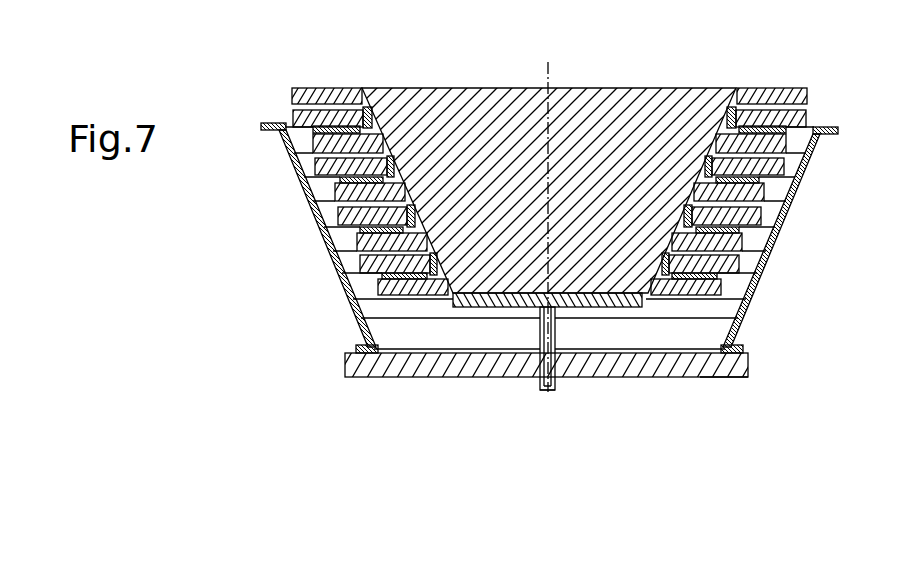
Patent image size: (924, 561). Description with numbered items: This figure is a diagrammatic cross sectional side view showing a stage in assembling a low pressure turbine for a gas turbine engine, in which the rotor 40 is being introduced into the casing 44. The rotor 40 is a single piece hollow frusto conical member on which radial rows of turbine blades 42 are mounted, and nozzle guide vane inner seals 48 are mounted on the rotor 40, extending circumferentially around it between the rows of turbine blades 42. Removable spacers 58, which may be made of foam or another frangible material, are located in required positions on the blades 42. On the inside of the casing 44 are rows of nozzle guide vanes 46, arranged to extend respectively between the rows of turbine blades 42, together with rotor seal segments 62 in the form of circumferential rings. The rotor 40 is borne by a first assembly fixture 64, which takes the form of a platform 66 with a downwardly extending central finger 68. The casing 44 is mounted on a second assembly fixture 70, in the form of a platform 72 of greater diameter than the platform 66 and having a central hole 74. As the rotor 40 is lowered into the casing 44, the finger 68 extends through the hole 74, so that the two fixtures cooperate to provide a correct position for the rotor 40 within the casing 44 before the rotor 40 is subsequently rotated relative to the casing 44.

The rotor 40 is at (647, 110).
The turbine blades 42 is at (793, 97).
The casing 44 is at (315, 218).
The nozzle guide vanes 46 is at (804, 120).
The nozzle guide vane inner seals 48 is at (733, 108).
The removable spacers 58 is at (741, 230).
The rotor seal segments 62 is at (801, 181).
The first assembly fixture 64 is at (460, 318).
The platform 66 is at (507, 308).
The central finger 68 is at (538, 389).
The second assembly fixture 70 is at (734, 388).
The platform 72 is at (670, 369).
The central hole 74 is at (556, 362).